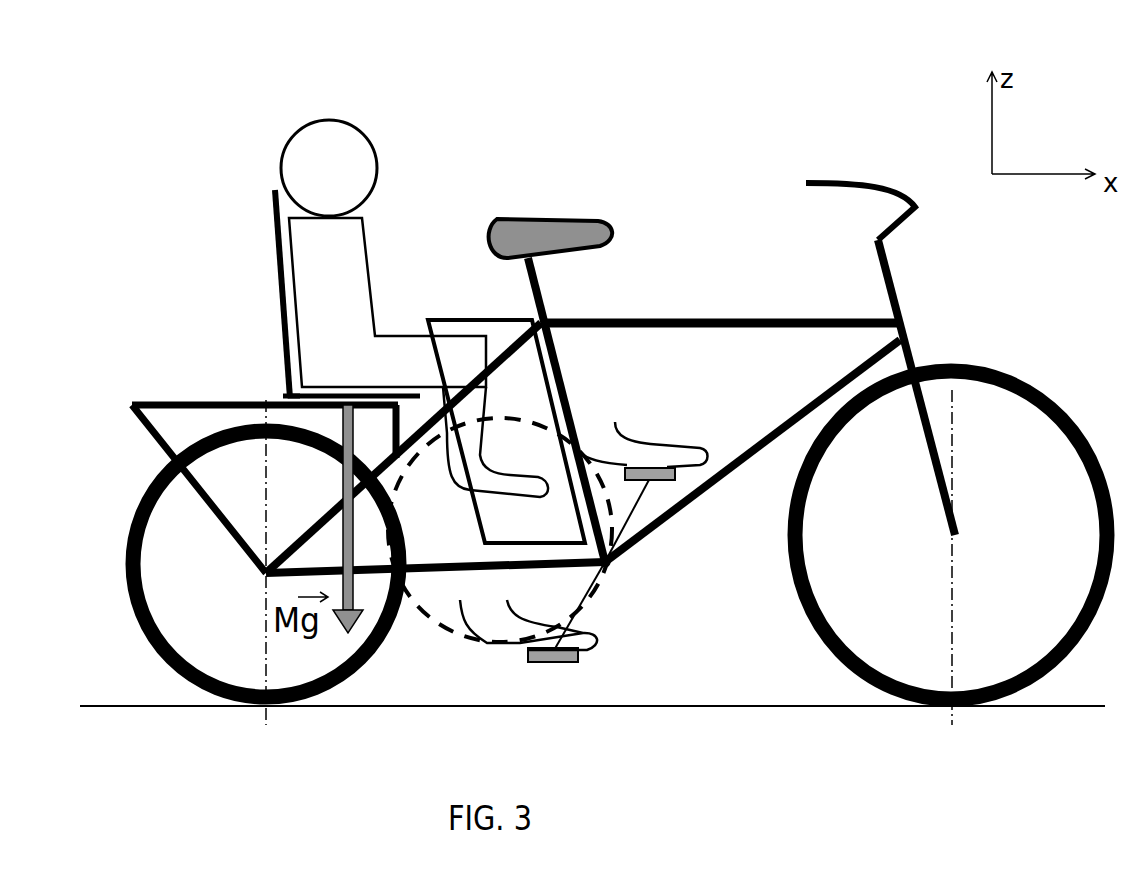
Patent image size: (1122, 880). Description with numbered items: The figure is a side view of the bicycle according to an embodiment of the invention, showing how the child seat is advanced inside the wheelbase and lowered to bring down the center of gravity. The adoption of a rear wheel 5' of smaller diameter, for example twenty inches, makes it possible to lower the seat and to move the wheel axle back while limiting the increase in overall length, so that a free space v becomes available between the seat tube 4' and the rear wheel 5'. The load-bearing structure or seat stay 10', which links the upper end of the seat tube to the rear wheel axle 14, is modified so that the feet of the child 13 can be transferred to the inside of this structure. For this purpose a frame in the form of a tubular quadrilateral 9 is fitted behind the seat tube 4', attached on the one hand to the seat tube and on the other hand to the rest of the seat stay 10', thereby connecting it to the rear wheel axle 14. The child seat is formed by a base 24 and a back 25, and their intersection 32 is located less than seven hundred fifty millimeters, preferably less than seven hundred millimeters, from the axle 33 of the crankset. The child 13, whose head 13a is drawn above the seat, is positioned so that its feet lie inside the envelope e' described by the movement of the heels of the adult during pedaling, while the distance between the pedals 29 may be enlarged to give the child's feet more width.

The head of the passenger 13a is at (339, 140).
The child 13 is at (356, 231).
The back of the child seat 25 is at (264, 240).
The base of the child seat 24 is at (312, 385).
The intersection between the base and the back of the child seat 32 is at (276, 390).
The load-bearing structure (rear fork or seat stay) 10' is at (265, 432).
The tubular quadrilateral frame 9 is at (428, 404).
The free space v is at (469, 307).
The seat tube 4' is at (606, 375).
The rear wheel 5' is at (225, 564).
The rear wheel axle 14 is at (252, 584).
The axle of the crankset 33 is at (625, 570).
The pedals 29 is at (553, 665).
The envelope described by the movement of the heels of the adult e' is at (499, 588).